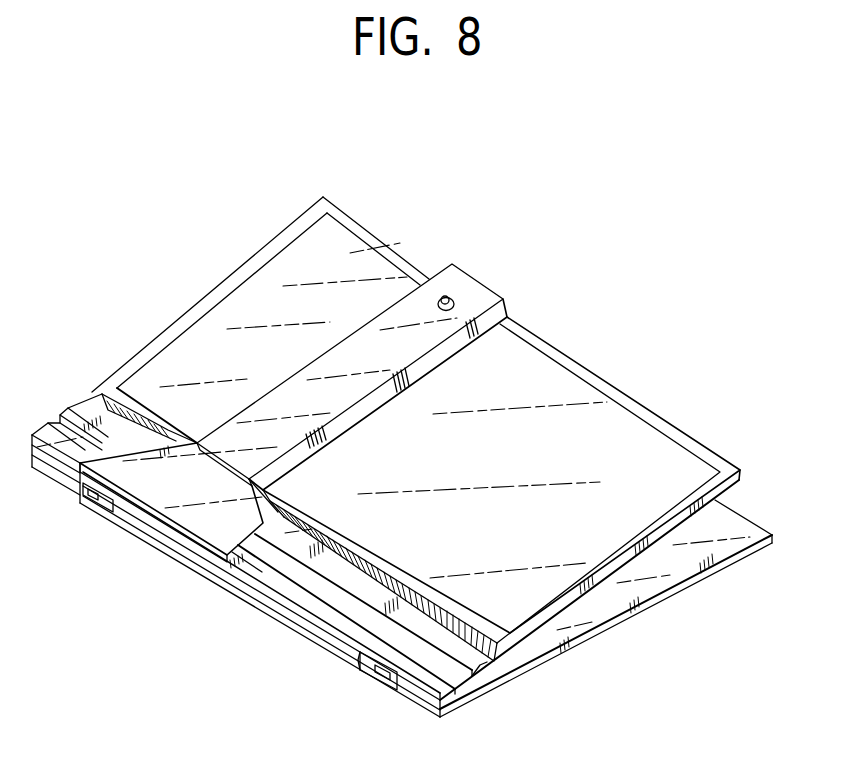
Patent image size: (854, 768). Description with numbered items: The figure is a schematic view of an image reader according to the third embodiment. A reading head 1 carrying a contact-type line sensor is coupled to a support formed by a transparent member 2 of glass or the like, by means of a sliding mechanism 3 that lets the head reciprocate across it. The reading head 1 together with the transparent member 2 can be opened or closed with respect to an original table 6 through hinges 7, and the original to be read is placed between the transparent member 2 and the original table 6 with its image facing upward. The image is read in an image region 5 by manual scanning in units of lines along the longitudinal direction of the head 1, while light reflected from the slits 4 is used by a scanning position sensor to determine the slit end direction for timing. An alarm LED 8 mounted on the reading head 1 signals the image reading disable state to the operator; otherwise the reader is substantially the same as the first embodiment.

The reading head 1 is at (465, 282).
The transparent member 2 is at (677, 455).
The sliding mechanism 3 is at (480, 663).
The slits 4 is at (497, 643).
The image region 5 is at (713, 488).
The original table 6 is at (718, 548).
The hinges 7 is at (372, 671).
The alarm LED 8 is at (457, 307).